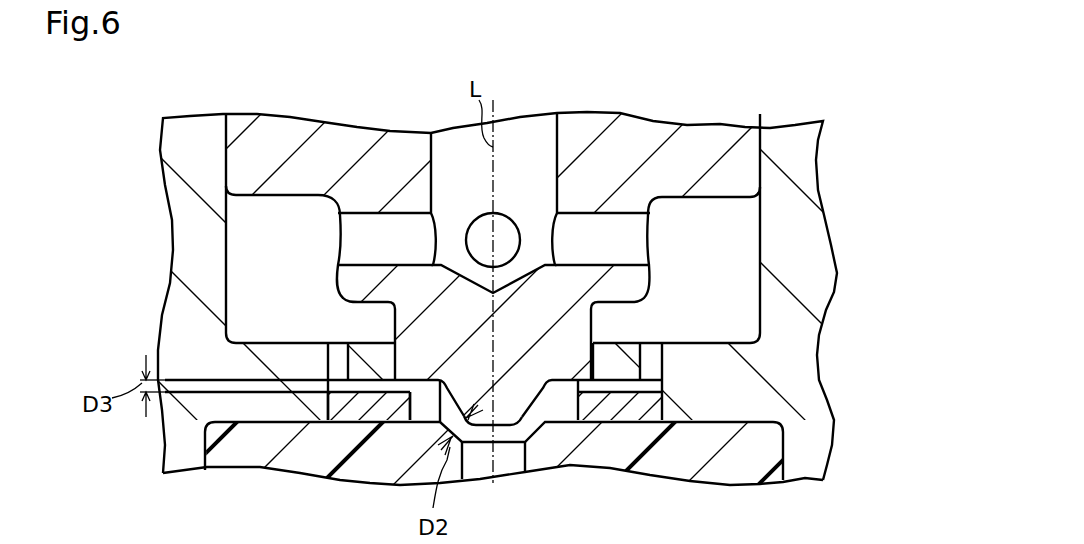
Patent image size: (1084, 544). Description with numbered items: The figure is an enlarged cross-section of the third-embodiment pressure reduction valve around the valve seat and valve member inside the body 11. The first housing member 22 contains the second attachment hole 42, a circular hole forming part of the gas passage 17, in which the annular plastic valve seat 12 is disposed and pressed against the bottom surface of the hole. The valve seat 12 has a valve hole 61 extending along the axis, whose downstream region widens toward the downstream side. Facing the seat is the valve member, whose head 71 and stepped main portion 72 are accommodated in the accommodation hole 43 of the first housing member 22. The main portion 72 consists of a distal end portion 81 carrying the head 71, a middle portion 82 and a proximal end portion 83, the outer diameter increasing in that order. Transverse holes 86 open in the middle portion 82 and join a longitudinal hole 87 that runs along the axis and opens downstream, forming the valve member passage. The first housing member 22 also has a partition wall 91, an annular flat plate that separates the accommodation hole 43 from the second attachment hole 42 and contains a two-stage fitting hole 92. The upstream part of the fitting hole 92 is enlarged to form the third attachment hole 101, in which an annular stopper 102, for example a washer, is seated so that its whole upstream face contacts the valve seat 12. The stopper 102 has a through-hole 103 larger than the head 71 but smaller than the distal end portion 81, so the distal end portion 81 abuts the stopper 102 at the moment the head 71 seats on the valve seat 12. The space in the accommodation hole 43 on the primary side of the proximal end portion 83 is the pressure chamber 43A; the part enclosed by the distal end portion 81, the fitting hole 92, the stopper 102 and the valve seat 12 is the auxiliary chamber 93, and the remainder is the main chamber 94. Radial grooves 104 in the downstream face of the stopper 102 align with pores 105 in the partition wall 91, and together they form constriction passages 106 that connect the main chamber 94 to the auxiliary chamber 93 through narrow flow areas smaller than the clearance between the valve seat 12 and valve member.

The body 11 is at (550, 296).
The valve seat 12 is at (243, 468).
The gas passage 17 is at (554, 352).
The first housing member 22 is at (833, 283).
The second attachment hole 42 is at (780, 438).
The accommodation hole 43 is at (768, 237).
The pressure chamber 43A is at (753, 335).
The valve hole 61 is at (525, 460).
The head 71 is at (483, 425).
The main portion 72 is at (225, 267).
The distal end portion 81 is at (405, 323).
The middle portion 82 is at (346, 283).
The proximal end portion 83 is at (243, 165).
The transverse holes 86 is at (478, 226).
The longitudinal hole 87 is at (436, 150).
The partition wall 91 is at (715, 358).
The fitting hole 92 is at (397, 357).
The auxiliary chamber 93 is at (557, 402).
The main chamber 94 is at (731, 211).
The third attachment hole 101 is at (655, 387).
The stopper 102 is at (335, 408).
The through-hole 103 is at (418, 414).
The grooves 104 is at (612, 378).
The pores 105 is at (660, 362).
The constriction passages 106 is at (673, 347).